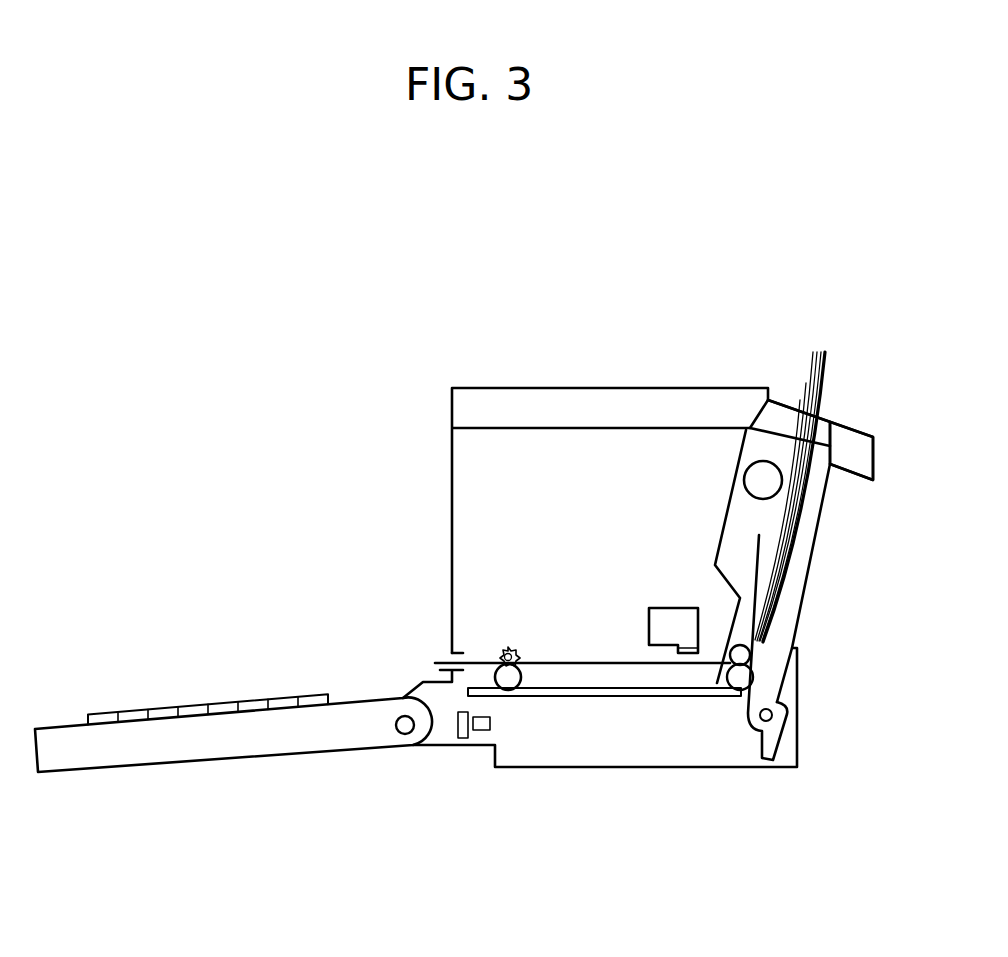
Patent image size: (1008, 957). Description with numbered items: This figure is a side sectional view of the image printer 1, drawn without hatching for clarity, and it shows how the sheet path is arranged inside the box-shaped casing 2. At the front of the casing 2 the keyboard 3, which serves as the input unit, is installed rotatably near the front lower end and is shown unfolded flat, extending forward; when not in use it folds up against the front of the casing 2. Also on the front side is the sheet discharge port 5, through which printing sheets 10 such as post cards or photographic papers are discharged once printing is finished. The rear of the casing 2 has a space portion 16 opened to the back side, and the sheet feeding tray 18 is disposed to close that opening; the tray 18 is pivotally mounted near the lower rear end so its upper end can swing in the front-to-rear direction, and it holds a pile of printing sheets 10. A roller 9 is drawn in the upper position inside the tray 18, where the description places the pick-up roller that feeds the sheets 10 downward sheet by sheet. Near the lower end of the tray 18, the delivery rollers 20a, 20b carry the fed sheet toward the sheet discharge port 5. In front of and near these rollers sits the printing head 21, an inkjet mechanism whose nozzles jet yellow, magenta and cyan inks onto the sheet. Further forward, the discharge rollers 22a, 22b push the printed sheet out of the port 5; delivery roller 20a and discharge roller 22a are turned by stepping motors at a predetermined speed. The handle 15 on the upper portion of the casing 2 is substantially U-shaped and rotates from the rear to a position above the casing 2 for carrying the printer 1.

The image printer 1 is at (357, 296).
The casing 2 is at (490, 388).
The keyboard 3 is at (218, 745).
The sheet discharge port 5 is at (448, 662).
The feed roller 9 is at (763, 480).
The printing sheets 10 is at (823, 368).
The handle 15 is at (852, 458).
The space portion 16 is at (718, 470).
The sheet feeding tray 18 is at (795, 593).
The delivery roller 20a is at (740, 677).
The delivery roller 20b is at (740, 655).
The printing head 21 is at (687, 657).
The discharge roller 22a is at (508, 677).
The discharge roller 22b is at (503, 650).